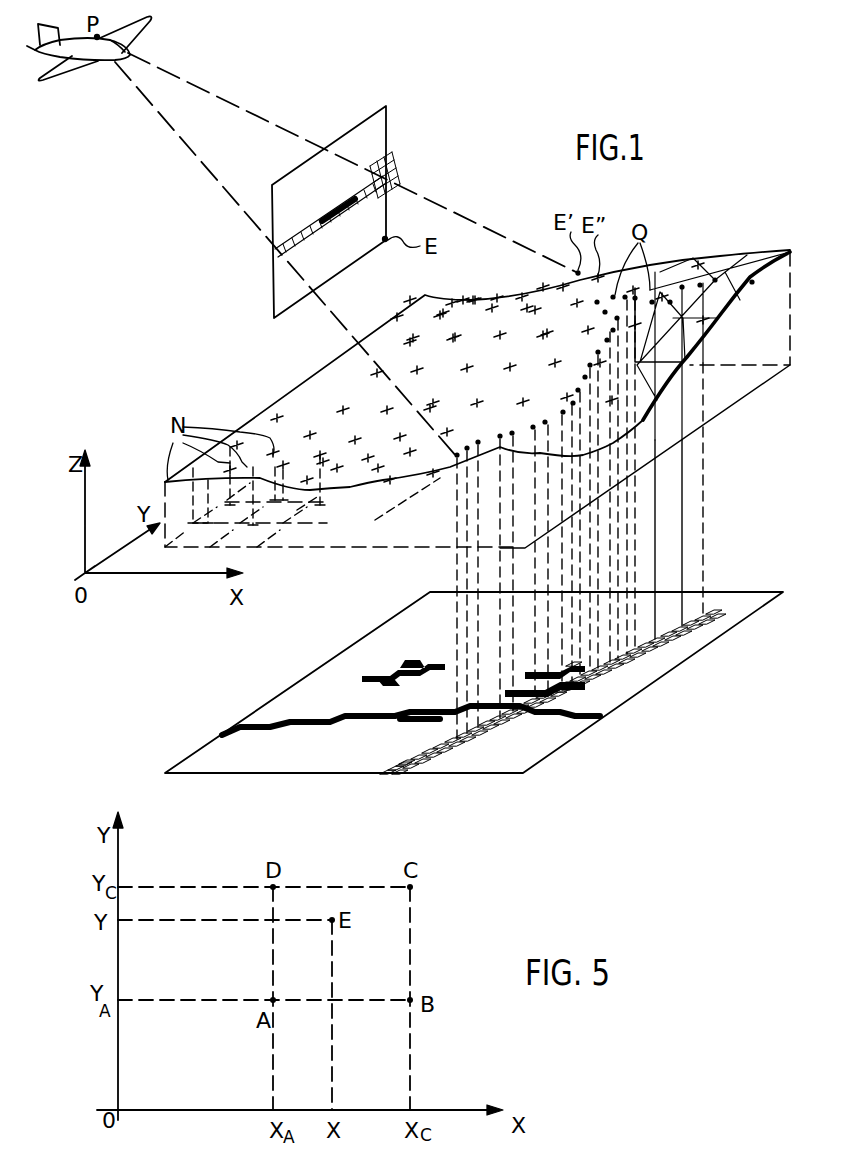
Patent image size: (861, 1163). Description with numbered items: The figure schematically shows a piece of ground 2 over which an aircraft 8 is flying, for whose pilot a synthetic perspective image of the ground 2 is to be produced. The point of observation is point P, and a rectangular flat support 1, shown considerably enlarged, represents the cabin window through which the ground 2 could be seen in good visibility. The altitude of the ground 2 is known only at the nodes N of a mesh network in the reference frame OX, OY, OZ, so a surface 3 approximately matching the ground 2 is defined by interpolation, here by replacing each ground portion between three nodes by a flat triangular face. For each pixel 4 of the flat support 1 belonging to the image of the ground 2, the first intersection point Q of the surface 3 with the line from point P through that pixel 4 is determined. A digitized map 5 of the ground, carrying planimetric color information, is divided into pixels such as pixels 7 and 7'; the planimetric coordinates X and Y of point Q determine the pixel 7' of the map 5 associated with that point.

The flat support 1 is at (350, 140).
The ground 2 is at (282, 406).
The surface 3 is at (735, 275).
The pixel 4 is at (386, 168).
The map 5 is at (311, 672).
The pixel 7 is at (406, 785).
The pixel 7' is at (638, 685).
The aircraft 8 is at (100, 60).